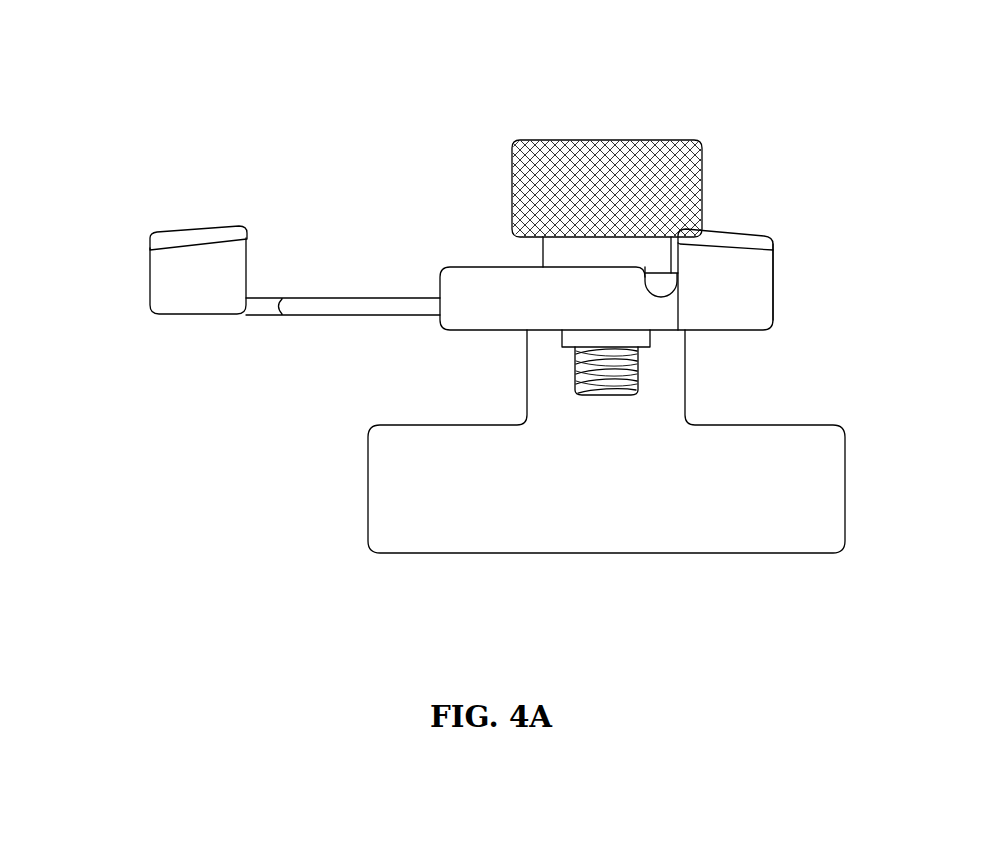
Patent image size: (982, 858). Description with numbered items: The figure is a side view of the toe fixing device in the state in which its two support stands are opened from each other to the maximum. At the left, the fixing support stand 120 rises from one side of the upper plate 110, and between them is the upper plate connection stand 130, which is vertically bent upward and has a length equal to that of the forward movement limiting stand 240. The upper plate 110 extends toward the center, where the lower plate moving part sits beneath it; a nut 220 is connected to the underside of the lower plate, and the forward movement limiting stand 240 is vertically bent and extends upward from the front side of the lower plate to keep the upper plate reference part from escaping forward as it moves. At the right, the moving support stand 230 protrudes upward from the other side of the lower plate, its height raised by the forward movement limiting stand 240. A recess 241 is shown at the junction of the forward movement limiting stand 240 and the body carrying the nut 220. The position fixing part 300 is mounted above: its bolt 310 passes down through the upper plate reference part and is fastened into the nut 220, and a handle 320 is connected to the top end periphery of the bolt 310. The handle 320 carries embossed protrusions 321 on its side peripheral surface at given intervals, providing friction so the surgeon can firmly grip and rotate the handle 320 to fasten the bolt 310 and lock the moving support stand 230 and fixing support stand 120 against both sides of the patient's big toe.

The upper plate 110 is at (364, 298).
The fixing support stand 120 is at (191, 230).
The upper plate connection stand 130 is at (150, 272).
The nut 220 is at (565, 340).
The moving support stand 230 is at (722, 228).
The forward movement limiting stand 240 is at (776, 283).
The notch 241 is at (663, 283).
The position fixing part 300 is at (648, 318).
The bolt 310 is at (608, 396).
The handle 320 is at (648, 155).
The embossed protrusions 321 is at (597, 140).